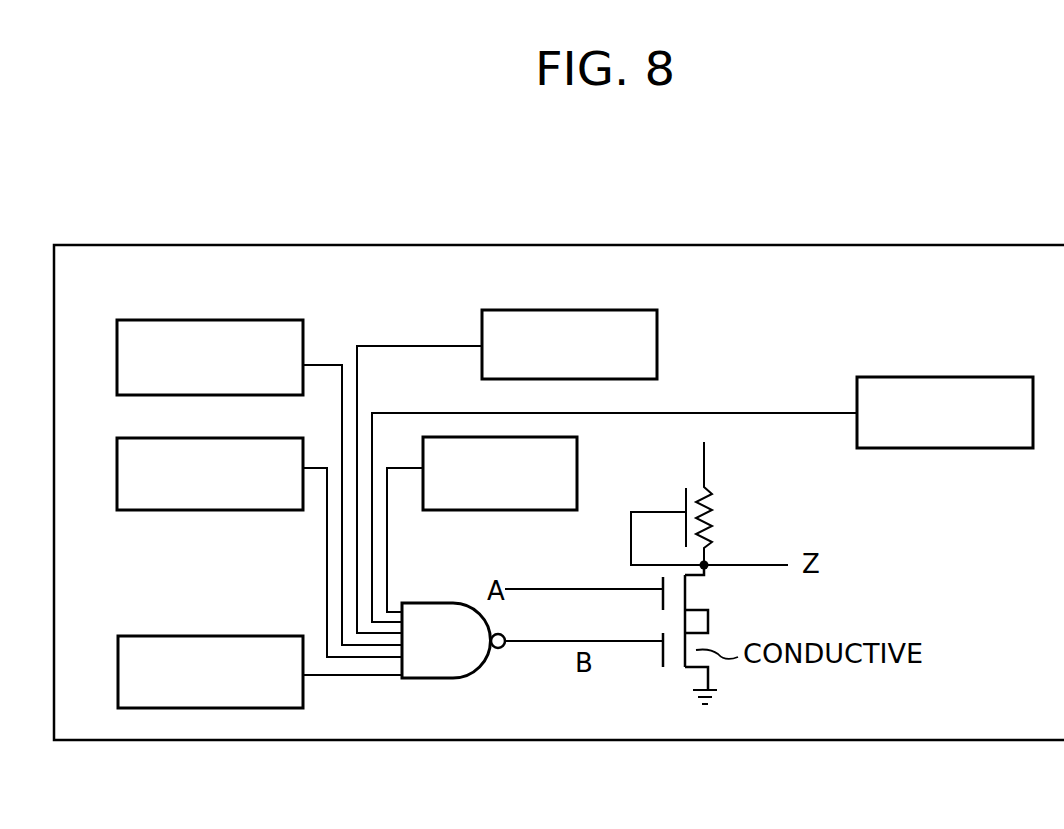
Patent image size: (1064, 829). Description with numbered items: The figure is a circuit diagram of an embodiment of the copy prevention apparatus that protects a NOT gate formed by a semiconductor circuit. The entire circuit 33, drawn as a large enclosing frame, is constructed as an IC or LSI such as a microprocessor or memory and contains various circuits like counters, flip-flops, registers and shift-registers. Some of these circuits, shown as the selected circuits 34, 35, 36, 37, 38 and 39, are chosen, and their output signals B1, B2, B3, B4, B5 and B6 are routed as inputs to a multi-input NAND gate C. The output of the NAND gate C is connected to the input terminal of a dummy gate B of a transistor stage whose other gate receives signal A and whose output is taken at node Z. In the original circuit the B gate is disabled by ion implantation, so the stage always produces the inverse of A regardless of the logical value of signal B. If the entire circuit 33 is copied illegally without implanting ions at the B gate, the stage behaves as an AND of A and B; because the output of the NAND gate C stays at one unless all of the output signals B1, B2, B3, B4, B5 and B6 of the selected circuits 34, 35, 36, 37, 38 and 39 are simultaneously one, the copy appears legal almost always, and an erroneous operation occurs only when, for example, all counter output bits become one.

The entire circuit 33 is at (438, 245).
The selected circuit 34 is at (577, 463).
The selected circuit 35 is at (922, 377).
The selected circuit 36 is at (563, 310).
The selected circuit 37 is at (207, 320).
The selected circuit 38 is at (196, 438).
The selected circuit 39 is at (220, 636).
The output signal B1 is at (387, 565).
The output signal B2 is at (372, 450).
The output signal B3 is at (358, 390).
The output signal B4 is at (320, 360).
The output signal B5 is at (313, 470).
The output signal B6 is at (320, 679).